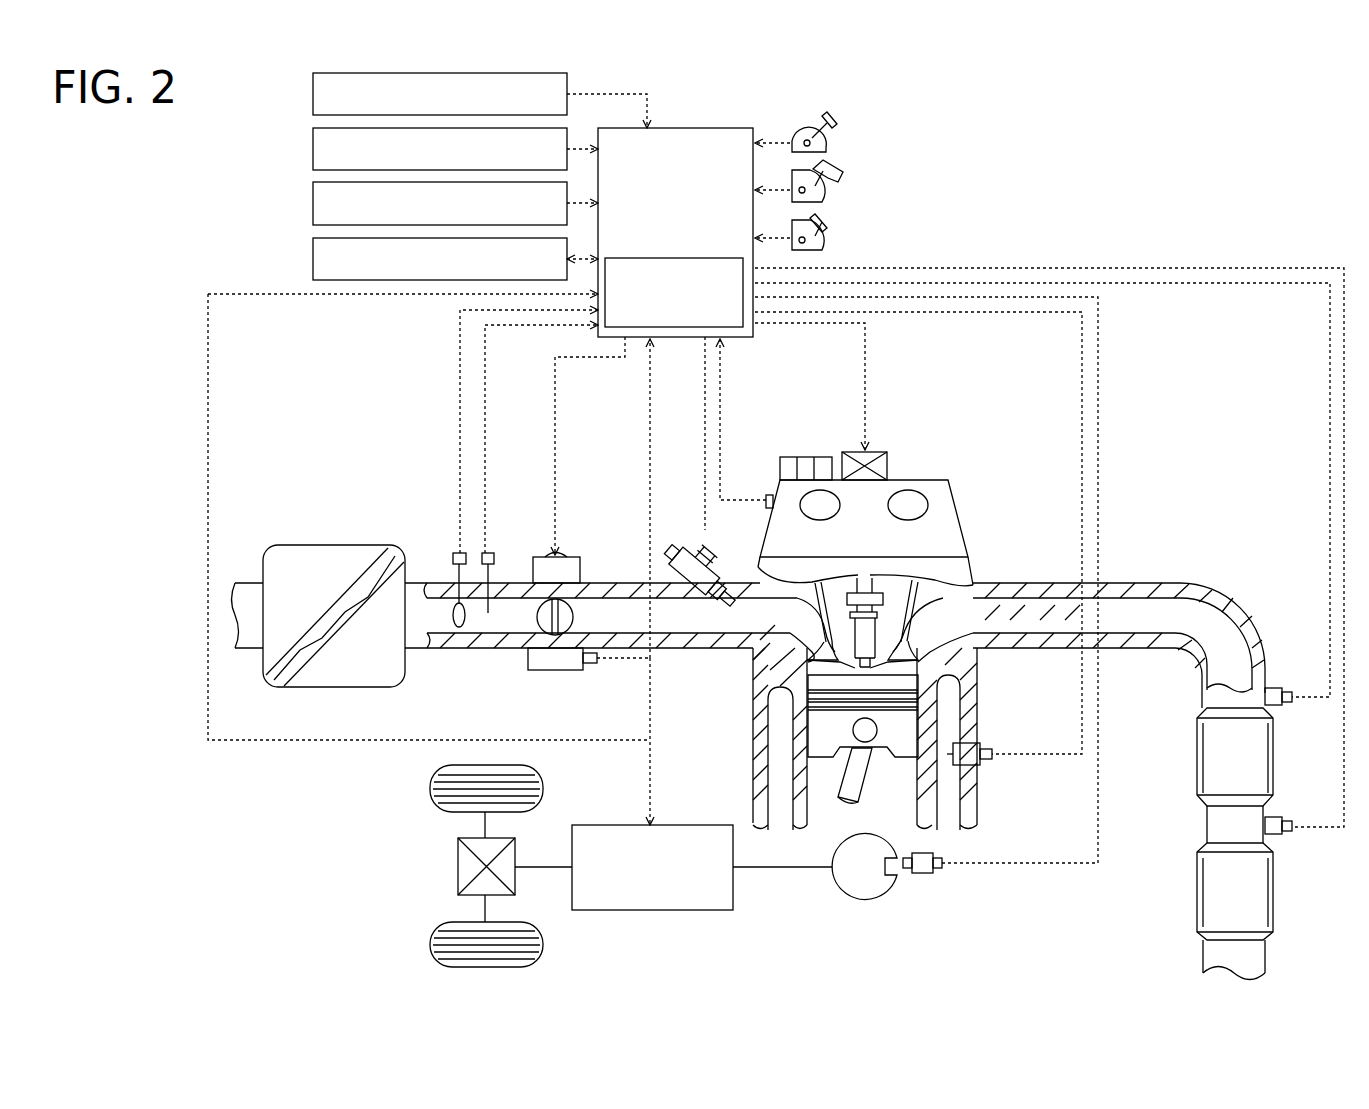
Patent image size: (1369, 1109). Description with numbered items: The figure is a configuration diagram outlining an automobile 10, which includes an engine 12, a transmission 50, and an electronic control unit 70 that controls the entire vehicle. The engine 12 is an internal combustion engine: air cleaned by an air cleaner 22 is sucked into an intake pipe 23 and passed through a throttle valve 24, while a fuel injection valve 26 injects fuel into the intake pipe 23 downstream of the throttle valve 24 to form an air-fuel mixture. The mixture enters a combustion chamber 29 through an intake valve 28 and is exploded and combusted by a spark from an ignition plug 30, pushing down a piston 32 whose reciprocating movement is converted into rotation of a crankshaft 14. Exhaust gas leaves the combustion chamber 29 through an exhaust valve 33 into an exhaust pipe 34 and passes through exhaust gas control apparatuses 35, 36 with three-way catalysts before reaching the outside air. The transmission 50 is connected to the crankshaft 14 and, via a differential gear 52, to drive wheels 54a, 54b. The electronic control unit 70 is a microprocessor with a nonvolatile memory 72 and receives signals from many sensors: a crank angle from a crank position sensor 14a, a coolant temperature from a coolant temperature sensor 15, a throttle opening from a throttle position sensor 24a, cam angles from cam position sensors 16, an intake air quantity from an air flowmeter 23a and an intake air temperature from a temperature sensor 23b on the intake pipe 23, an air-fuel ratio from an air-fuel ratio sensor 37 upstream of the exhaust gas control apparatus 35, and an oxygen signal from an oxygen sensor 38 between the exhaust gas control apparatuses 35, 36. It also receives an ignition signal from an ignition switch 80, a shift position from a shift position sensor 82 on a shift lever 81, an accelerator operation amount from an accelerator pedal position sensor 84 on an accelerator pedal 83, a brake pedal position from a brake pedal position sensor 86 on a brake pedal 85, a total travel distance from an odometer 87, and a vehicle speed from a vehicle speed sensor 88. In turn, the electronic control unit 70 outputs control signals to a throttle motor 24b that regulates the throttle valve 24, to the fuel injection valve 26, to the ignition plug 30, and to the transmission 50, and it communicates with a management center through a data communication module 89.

The automobile 10 is at (1110, 138).
The engine 12 is at (948, 390).
The crankshaft 14 is at (863, 902).
The crank position sensor 14a is at (918, 875).
The coolant temperature sensor 15 is at (985, 768).
The cam position sensors 16 is at (767, 495).
The air cleaner 22 is at (333, 545).
The intake pipe 23 is at (477, 650).
The air flowmeter 23a is at (453, 560).
The temperature sensor 23b is at (495, 558).
The throttle valve 24 is at (542, 615).
The throttle position sensor 24a is at (555, 670).
The throttle motor 24b is at (573, 557).
The fuel injection valve 26 is at (690, 573).
The intake valve 28 is at (757, 650).
The combustion chamber 29 is at (818, 670).
The ignition plug 30 is at (878, 625).
The piston 32 is at (825, 743).
The exhaust valve 33 is at (930, 647).
The exhaust pipe 34 is at (1038, 583).
The exhaust gas control apparatus 35 is at (1197, 758).
The exhaust gas control apparatus 36 is at (1197, 892).
The air-fuel ratio sensor 37 is at (1285, 688).
The oxygen sensor 38 is at (1285, 817).
The transmission 50 is at (673, 825).
The differential gear 52 is at (458, 865).
The drive wheel 54a is at (430, 789).
The drive wheel 54b is at (430, 944).
The electronic control unit 70 is at (673, 128).
The nonvolatile memory 72 is at (677, 258).
The ignition switch 80 is at (313, 96).
The shift lever 81 is at (835, 126).
The shift position sensor 82 is at (826, 144).
The accelerator pedal 83 is at (843, 172).
The accelerator pedal position sensor 84 is at (823, 193).
The brake pedal 85 is at (830, 226).
The brake pedal position sensor 86 is at (823, 245).
The odometer 87 is at (313, 152).
The vehicle speed sensor 88 is at (313, 206).
The data communication module 89 is at (313, 262).